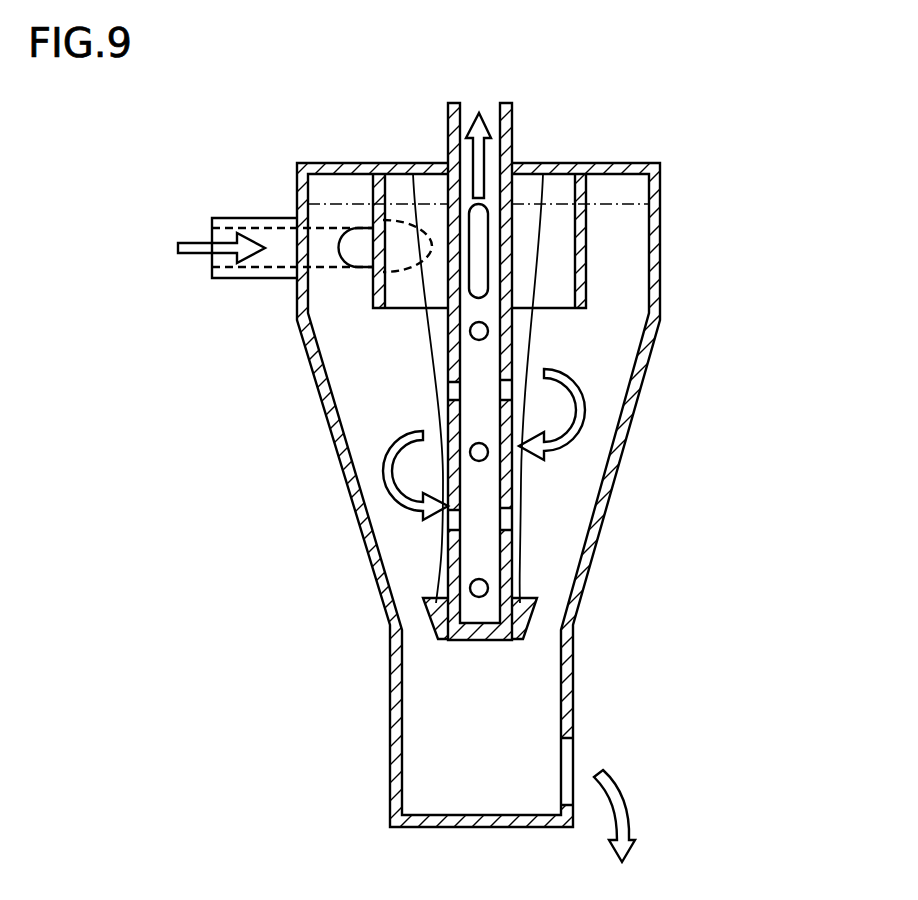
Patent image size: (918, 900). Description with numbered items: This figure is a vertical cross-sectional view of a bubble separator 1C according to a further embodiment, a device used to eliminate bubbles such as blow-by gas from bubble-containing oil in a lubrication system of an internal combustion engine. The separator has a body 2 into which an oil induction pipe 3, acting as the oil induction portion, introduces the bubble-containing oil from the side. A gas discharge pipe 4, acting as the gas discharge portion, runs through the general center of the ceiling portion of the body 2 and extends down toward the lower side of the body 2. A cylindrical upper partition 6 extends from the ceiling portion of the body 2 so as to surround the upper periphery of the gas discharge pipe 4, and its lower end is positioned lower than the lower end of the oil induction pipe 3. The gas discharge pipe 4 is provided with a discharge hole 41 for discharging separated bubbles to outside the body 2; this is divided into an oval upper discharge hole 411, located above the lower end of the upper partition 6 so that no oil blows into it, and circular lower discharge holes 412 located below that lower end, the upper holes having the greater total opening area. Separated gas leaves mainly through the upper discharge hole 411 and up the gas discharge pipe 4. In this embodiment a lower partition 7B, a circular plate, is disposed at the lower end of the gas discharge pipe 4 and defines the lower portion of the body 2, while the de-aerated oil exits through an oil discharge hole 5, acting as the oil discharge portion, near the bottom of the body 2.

The bubble separator 1C is at (683, 179).
The body 2 is at (661, 302).
The oil induction pipe 3 is at (232, 218).
The gas discharge pipe 4 is at (513, 110).
The oil discharge hole 5 is at (580, 747).
The upper partition 6 is at (587, 237).
The discharge hole 41 is at (651, 400).
The upper discharge hole 411 is at (486, 300).
The lower discharge hole 412 is at (488, 333).
The lower partition 7B is at (535, 610).